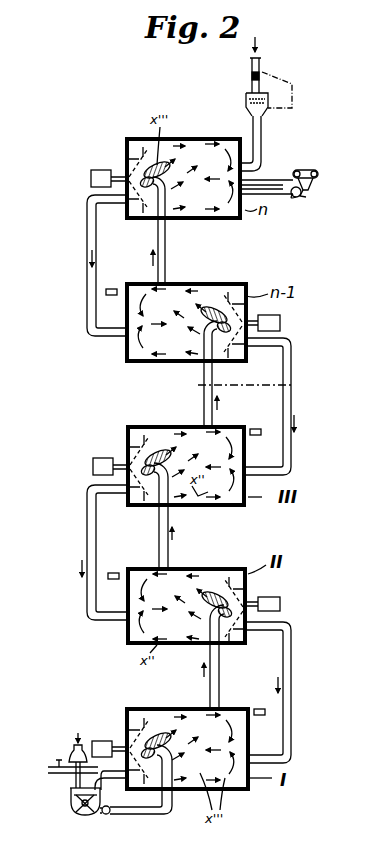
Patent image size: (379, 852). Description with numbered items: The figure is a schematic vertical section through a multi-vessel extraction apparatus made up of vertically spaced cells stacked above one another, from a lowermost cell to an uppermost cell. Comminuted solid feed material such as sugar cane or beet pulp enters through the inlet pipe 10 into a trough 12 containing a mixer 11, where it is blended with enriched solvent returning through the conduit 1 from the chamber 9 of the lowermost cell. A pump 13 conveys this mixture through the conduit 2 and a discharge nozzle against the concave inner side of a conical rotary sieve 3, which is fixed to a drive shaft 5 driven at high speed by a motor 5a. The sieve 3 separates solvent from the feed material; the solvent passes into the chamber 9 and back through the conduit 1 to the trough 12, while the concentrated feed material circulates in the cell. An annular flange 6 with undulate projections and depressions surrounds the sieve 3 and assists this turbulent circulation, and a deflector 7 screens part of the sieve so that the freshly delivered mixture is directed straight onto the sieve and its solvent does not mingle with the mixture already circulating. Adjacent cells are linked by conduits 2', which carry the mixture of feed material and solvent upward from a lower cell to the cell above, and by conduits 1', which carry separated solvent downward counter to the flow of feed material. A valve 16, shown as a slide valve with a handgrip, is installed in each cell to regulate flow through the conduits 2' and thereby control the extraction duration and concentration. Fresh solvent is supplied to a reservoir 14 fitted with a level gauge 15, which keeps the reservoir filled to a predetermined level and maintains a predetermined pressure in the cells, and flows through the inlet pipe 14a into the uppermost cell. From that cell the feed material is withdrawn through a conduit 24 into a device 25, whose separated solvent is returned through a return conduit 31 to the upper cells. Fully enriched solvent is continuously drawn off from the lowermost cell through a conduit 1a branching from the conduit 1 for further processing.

The conduit 1 is at (110, 785).
The conduit 1a is at (56, 759).
The conduits 1' is at (192, 479).
The conduit 2 is at (160, 810).
The conduits 2' is at (198, 463).
The conical rotary sieve 3 is at (133, 507).
The drive shaft 5 is at (259, 600).
The motor 5a is at (102, 731).
The annular flange 6 is at (139, 426).
The deflector 7 is at (186, 464).
The chamber 9 is at (179, 450).
The inlet pipe 10 is at (70, 785).
The mixer 11 is at (78, 814).
The trough 12 is at (74, 817).
The pump 13 is at (109, 815).
The reservoir 14 is at (247, 100).
The inlet pipe 14a is at (263, 140).
The level gauge 15 is at (286, 95).
The valve 16 is at (110, 289).
The conduit 24 is at (330, 162).
The device 25 is at (318, 167).
The return conduit 31 is at (268, 190).